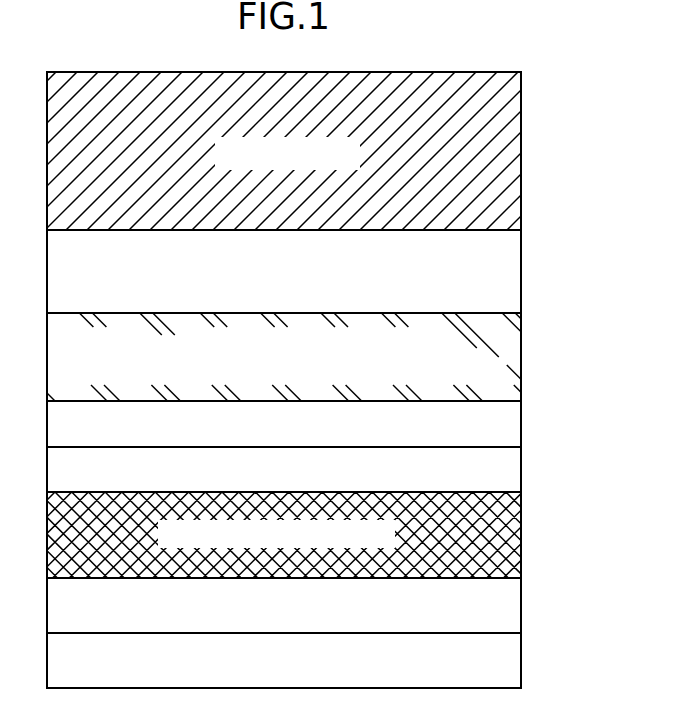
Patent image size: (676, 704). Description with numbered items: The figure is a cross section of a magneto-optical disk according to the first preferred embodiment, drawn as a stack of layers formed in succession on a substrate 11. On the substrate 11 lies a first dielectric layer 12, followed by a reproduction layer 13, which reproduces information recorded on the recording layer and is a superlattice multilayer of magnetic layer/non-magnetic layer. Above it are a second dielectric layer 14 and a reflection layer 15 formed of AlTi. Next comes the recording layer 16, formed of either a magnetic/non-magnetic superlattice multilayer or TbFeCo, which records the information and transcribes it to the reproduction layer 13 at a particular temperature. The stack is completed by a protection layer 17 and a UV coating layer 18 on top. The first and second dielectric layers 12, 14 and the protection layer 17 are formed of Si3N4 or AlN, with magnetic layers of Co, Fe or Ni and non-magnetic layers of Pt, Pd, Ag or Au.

The substrate 11 is at (507, 148).
The first dielectric layer 12 is at (507, 270).
The reproduction layer 13 is at (507, 338).
The second dielectric layer 14 is at (507, 425).
The reflection layer 15 is at (507, 470).
The recording layer 16 is at (507, 537).
The protection layer 17 is at (507, 605).
The UV coating layer 18 is at (507, 661).